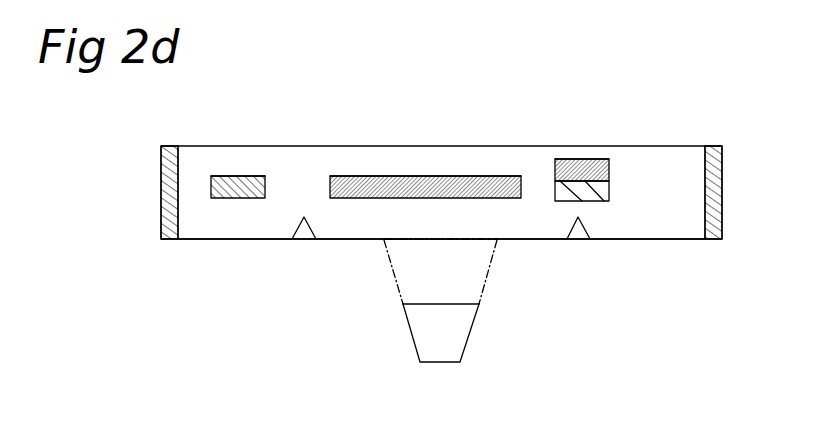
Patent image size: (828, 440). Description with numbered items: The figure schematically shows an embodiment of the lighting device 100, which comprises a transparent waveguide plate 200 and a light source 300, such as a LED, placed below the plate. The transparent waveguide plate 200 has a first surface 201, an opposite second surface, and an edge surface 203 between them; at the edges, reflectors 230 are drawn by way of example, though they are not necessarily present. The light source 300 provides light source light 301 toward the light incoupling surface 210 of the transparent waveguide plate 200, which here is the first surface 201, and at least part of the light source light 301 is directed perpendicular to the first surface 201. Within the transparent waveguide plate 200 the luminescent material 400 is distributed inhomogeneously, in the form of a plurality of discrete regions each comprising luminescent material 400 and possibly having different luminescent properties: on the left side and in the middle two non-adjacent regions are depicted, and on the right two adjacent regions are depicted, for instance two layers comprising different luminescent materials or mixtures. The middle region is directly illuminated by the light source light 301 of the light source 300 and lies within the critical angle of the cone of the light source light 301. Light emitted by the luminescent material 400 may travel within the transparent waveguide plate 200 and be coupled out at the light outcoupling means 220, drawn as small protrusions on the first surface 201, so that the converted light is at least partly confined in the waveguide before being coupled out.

The lighting device 100 is at (652, 142).
The transparent waveguide plate 200 is at (495, 286).
The first surface 201 is at (522, 240).
The edge surface 203 is at (168, 214).
The light incoupling surface 210 is at (428, 240).
The light outcoupling means 220 is at (297, 241).
The reflector 230 is at (172, 174).
The light source 300 is at (443, 380).
The light source light 301 is at (413, 275).
The luminescent material 400 is at (222, 176).